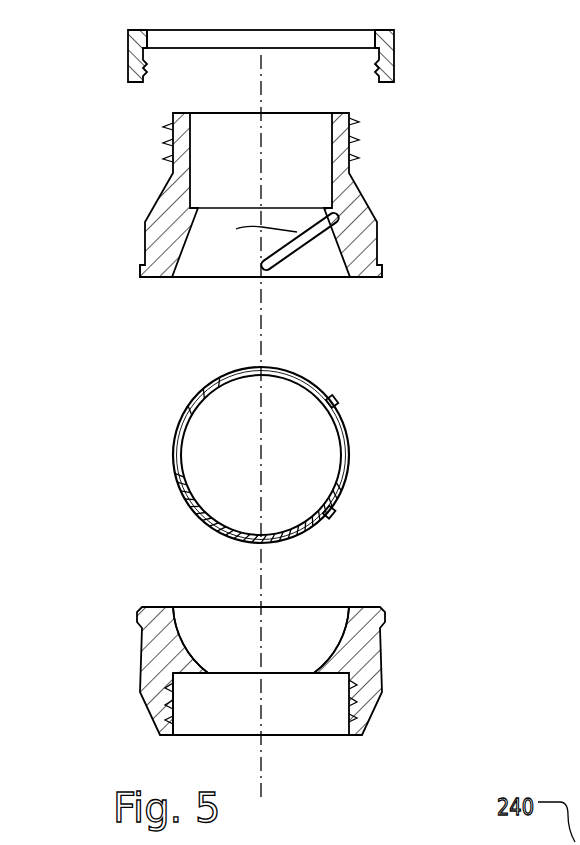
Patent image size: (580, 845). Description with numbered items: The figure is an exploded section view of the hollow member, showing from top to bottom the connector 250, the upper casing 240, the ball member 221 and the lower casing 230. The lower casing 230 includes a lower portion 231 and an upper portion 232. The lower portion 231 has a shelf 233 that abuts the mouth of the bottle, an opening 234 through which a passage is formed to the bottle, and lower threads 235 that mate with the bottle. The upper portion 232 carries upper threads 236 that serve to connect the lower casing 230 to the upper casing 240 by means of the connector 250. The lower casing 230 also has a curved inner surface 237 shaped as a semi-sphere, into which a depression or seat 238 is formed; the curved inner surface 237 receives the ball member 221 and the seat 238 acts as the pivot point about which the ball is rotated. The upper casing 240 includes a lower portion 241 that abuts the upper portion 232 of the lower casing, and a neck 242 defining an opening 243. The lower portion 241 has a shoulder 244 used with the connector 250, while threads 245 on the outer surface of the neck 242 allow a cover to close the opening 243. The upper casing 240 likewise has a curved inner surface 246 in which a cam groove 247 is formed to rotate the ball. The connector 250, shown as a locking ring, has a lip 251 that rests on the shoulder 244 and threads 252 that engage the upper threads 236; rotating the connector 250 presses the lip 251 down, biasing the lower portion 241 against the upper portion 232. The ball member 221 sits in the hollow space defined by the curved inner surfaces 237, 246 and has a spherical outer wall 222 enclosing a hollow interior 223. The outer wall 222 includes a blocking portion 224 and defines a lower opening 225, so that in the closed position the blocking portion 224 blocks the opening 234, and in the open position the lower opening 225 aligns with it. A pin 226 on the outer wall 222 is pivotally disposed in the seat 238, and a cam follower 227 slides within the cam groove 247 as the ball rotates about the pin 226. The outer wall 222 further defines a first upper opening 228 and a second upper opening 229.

The ball member 221 is at (289, 446).
The spherical outer wall 222 is at (198, 388).
The hollow interior 223 is at (292, 447).
The blocking portion 224 is at (210, 528).
The lower opening 225 is at (347, 474).
The pin 226 is at (332, 518).
The cam follower 227 is at (336, 398).
The first upper opening 228 is at (290, 367).
The second upper opening 229 is at (175, 448).
The lower casing 230 is at (290, 689).
The lower portion 231 is at (155, 692).
The upper portion 232 is at (167, 606).
The shelf 233 is at (186, 682).
The opening 234 is at (265, 675).
The lower threads 235 is at (350, 710).
The upper threads 236 is at (137, 622).
The curved inner surface 237 is at (342, 640).
The seat 238 is at (330, 665).
The upper casing 240 is at (279, 218).
The lower portion 241 is at (362, 278).
The neck 242 is at (174, 169).
The opening 243 is at (229, 127).
The shoulder 244 is at (140, 270).
The threads 245 is at (358, 148).
The curved inner surface 246 is at (347, 254).
The cam groove 247 is at (236, 229).
The connector 250 is at (290, 46).
The lip 251 is at (141, 28).
The threads 252 is at (145, 68).